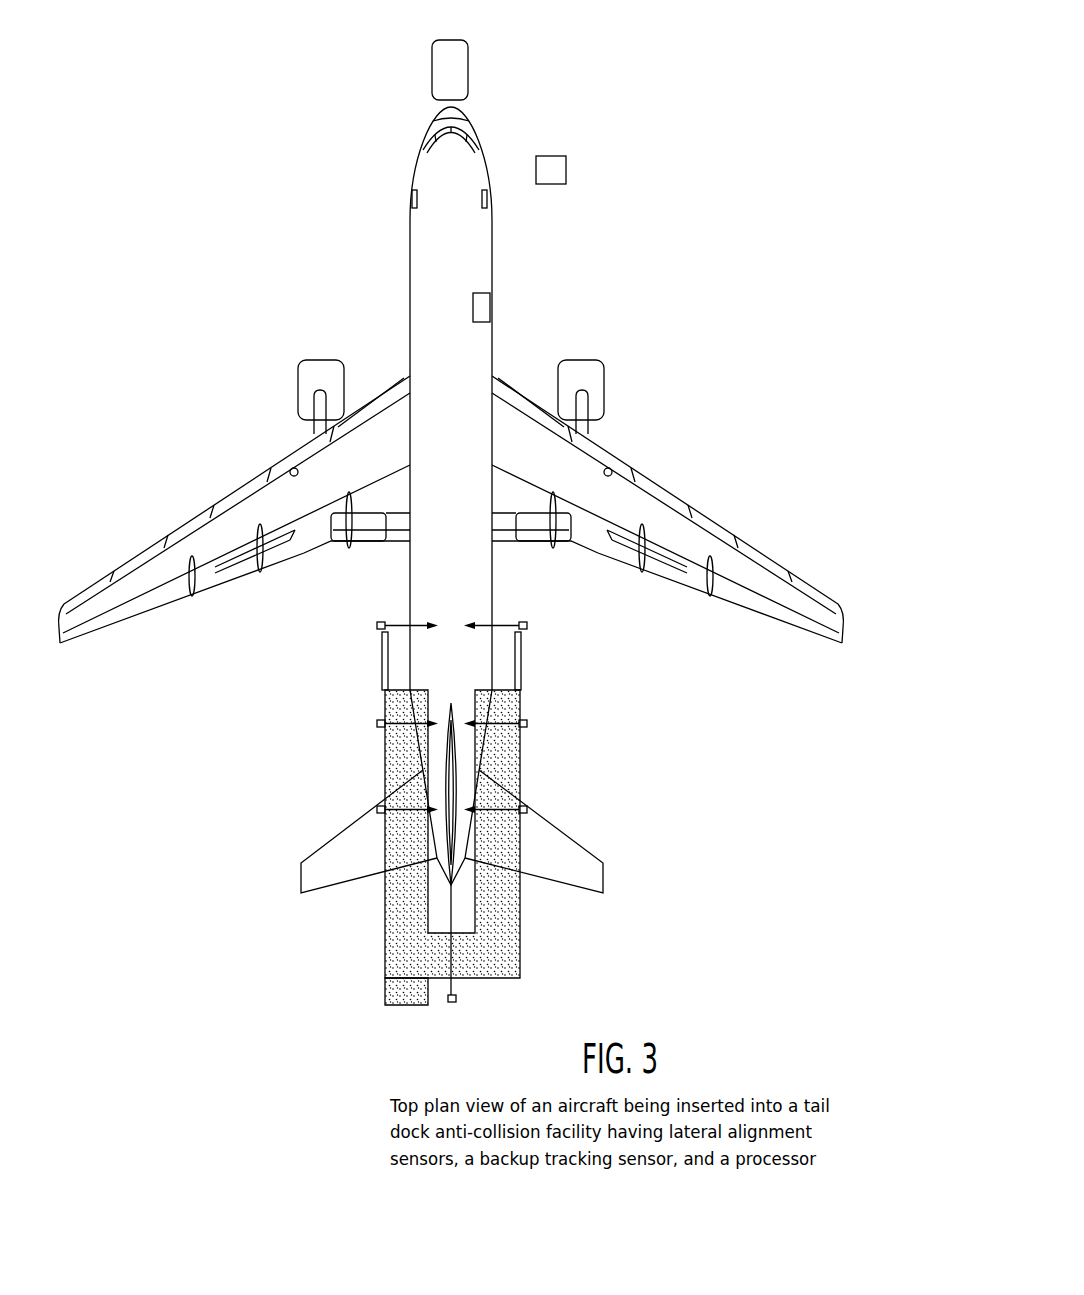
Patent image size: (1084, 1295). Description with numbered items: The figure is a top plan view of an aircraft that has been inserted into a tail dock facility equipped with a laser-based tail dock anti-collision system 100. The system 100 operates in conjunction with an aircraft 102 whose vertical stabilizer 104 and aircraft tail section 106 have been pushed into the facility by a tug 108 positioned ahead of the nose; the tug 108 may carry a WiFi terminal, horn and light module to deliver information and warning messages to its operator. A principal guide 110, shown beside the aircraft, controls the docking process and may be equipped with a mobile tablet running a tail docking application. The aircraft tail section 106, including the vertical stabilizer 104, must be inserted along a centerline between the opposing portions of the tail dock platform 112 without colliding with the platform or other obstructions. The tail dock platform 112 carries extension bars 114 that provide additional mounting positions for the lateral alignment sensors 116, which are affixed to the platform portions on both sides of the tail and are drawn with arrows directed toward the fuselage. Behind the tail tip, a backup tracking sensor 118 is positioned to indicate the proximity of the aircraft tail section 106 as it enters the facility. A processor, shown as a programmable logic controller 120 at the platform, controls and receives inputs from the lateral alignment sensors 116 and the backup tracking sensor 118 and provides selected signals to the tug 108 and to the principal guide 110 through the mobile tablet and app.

The laser-based tail dock anti-collision system 100 is at (315, 25).
The aircraft 102 is at (489, 222).
The vertical stabilizer 104 is at (455, 760).
The aircraft tail section 106 is at (458, 876).
The tug 108 is at (468, 58).
The principal guide 110 is at (566, 165).
The tail dock platform 112 is at (384, 927).
The extension bars 114 is at (381, 670).
The lateral alignment sensors 116 is at (527, 723).
The backup tracking sensor 118 is at (457, 998).
The programmable logic controller 120 is at (392, 1005).